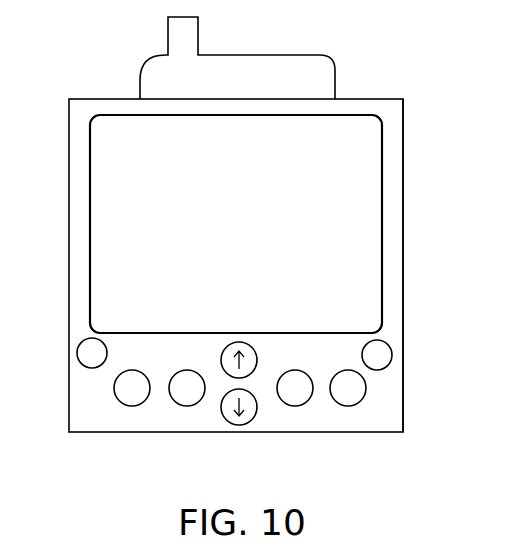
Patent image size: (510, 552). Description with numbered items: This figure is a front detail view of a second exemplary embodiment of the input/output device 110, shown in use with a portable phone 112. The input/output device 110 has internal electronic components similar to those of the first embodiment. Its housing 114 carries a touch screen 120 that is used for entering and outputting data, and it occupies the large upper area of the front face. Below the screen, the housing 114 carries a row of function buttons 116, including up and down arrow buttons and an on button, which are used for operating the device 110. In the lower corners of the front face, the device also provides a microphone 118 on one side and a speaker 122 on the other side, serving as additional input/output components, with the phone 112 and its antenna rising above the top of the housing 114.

The input/output device 110 is at (370, 90).
The portable phone 112 is at (255, 54).
The housing 114 is at (409, 254).
The function buttons 116 is at (191, 405).
The microphone 118 is at (70, 350).
The display screen 120 is at (360, 180).
The speaker 122 is at (389, 347).